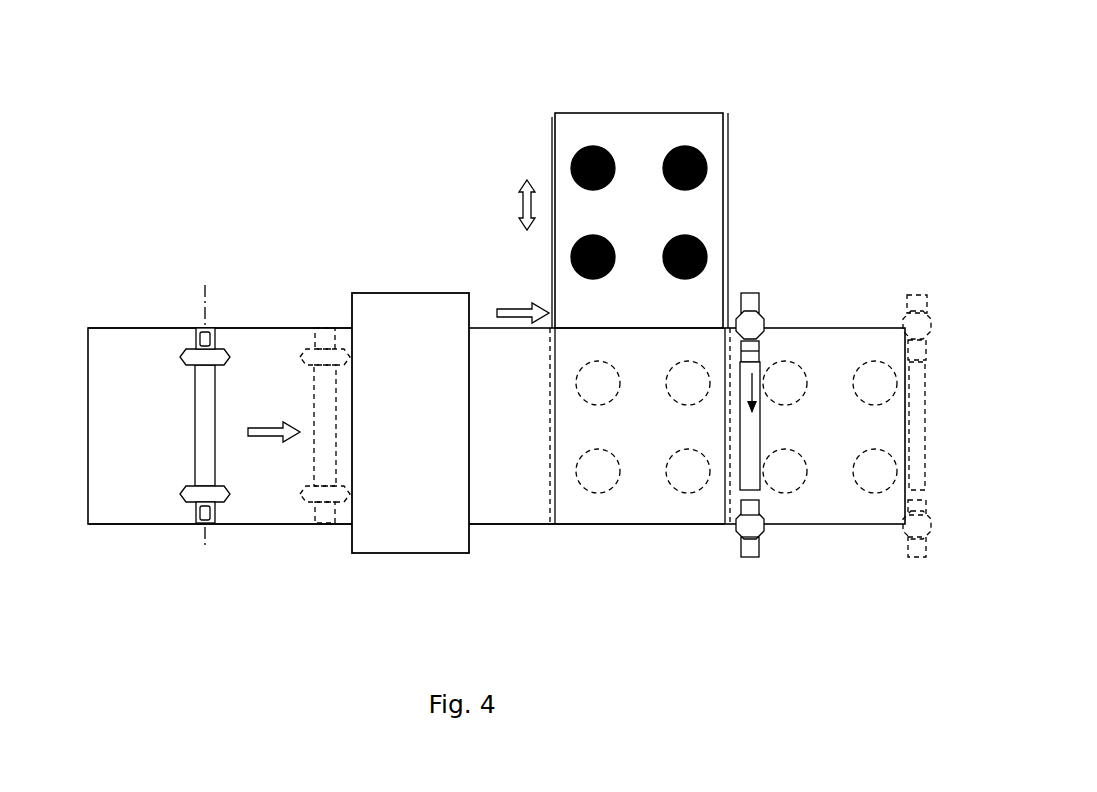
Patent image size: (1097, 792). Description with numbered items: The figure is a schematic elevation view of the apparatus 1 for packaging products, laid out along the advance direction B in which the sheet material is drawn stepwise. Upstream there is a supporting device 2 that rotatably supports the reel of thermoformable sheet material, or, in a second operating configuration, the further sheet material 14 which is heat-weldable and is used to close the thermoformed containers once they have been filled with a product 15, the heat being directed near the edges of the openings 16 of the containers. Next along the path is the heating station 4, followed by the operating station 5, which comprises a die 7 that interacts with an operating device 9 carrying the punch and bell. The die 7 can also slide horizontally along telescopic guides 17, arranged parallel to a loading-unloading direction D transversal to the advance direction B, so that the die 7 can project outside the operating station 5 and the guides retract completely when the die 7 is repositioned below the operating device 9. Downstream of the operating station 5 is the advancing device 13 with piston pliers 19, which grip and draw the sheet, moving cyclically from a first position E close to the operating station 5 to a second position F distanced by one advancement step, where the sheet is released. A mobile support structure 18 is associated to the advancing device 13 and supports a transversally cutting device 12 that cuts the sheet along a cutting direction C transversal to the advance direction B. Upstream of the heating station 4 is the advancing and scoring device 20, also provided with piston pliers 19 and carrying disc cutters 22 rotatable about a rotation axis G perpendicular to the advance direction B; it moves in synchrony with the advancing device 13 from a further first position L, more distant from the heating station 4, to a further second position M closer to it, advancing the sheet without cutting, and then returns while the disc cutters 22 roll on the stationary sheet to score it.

The apparatus 1 is at (352, 151).
The supporting device 2 is at (100, 540).
The heating station 4 is at (388, 305).
The operating station 5 is at (530, 572).
The die 7 is at (692, 218).
The operating device 9 is at (650, 572).
The transversally cutting device 12 is at (757, 352).
The advancing device 13 is at (810, 403).
The further sheet material 14 is at (268, 330).
The product 15 is at (583, 150).
The openings 16 is at (668, 150).
The telescopic guides 17 is at (552, 142).
The mobile support structure 18 is at (752, 468).
The piston pliers 19 is at (200, 312).
The advancing and scoring device 20 is at (177, 537).
The disc cutters 22 is at (226, 358).
The advance direction B is at (398, 361).
The cutting direction C is at (760, 392).
The loading-unloading direction D is at (515, 205).
The first position E is at (755, 580).
The second position F is at (905, 572).
The rotation axis G is at (197, 415).
The further first position L is at (190, 318).
The further second position M is at (322, 542).